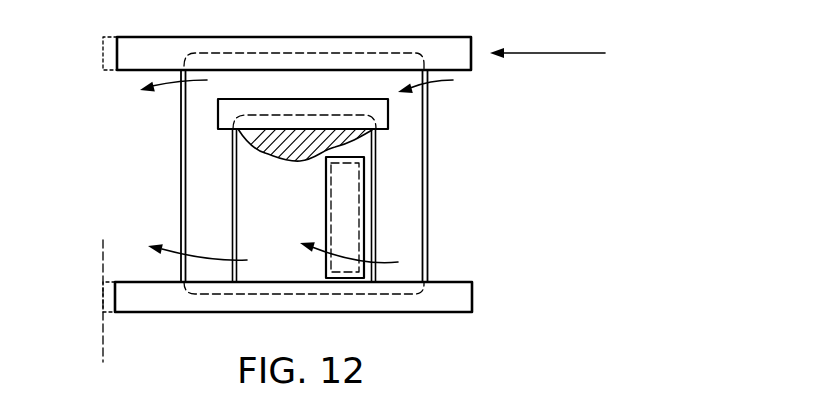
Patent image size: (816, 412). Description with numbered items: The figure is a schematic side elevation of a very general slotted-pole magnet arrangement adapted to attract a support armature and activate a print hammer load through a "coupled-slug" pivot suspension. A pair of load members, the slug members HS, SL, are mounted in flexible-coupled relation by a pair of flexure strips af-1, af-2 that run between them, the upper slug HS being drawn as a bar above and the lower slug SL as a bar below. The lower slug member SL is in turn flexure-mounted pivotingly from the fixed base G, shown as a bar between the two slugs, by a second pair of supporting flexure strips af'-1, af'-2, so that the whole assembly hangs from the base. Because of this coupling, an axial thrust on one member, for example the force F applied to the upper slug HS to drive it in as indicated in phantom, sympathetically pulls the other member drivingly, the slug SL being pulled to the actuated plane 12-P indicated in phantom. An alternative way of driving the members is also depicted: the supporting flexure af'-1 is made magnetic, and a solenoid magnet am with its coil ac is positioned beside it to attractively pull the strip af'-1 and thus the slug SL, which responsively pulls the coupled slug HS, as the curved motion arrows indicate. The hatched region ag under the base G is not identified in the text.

The slug member HS is at (440, 37).
The slug member SL is at (440, 309).
The fixed base G is at (307, 99).
The flexure strip af-2 is at (181, 118).
The flexure strip af-1 is at (428, 130).
The flexure strip af'-2 is at (167, 205).
The flexure strip af'-1 is at (445, 205).
The agglomerated material ag is at (374, 145).
The magnet am is at (326, 182).
The coil ac is at (331, 225).
The actuated-plane 12-P is at (120, 300).
The force F is at (558, 55).